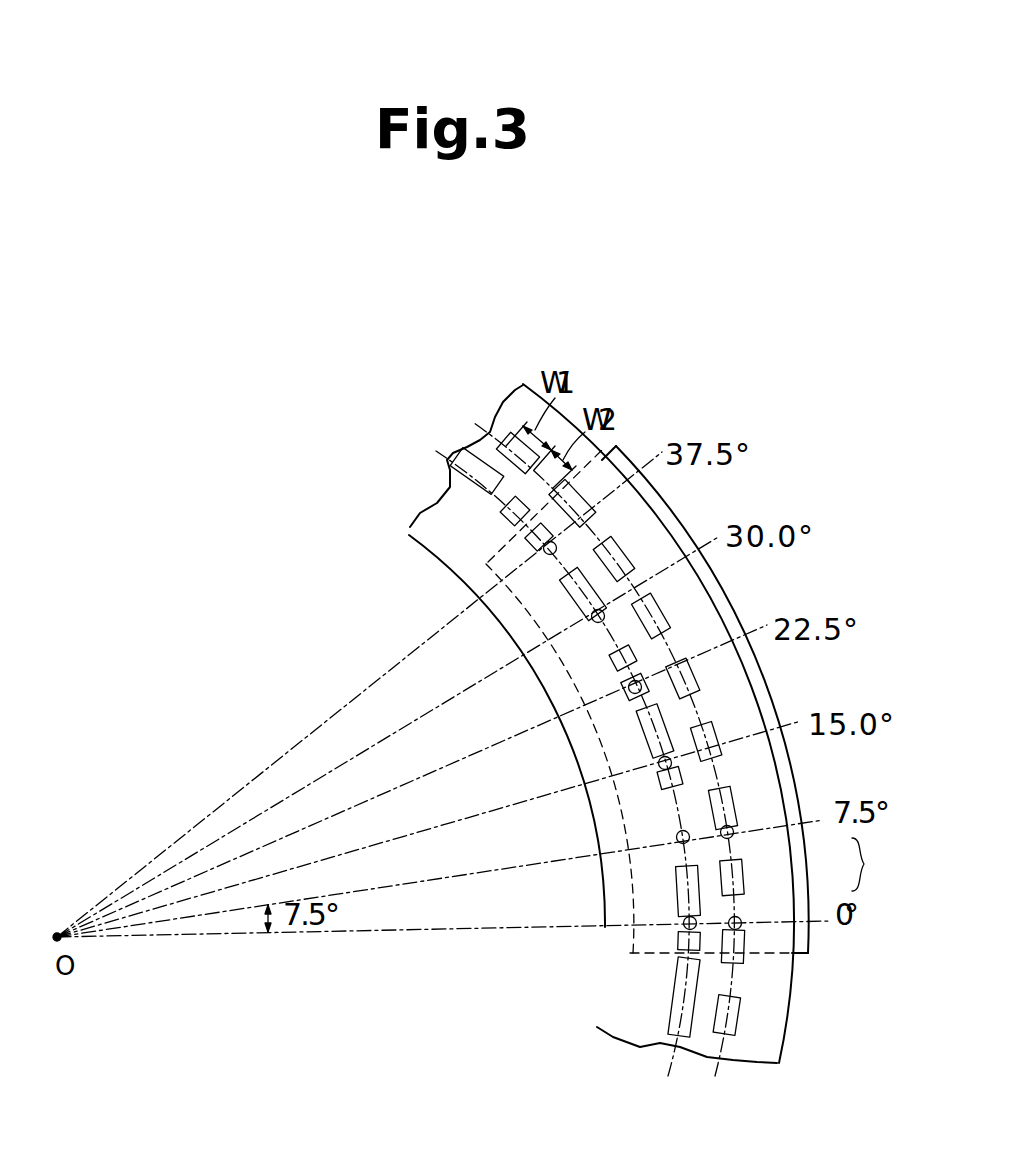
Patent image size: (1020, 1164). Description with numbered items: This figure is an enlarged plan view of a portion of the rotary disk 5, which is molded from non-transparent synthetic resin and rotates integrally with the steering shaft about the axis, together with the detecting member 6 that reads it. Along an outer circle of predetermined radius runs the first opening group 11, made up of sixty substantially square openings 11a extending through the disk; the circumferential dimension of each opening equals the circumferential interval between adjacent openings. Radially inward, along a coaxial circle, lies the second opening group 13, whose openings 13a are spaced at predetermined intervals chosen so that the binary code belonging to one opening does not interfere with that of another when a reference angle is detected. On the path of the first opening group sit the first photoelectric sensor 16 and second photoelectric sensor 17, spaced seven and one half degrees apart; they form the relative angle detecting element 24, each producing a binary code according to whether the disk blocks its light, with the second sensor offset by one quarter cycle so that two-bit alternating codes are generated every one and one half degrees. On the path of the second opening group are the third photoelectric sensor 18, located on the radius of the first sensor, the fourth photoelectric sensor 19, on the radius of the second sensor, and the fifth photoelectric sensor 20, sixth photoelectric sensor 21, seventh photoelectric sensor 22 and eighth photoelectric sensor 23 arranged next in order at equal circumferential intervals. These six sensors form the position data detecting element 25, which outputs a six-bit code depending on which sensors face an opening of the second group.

The rotary disk 5 is at (772, 1030).
The detecting member 6 is at (806, 948).
The first opening group 11 is at (690, 666).
The opening 11a is at (625, 552).
The second opening group 13 is at (460, 473).
The opening 13a is at (505, 514).
The first photoelectric sensor 16 is at (741, 921).
The second photoelectric sensor 17 is at (734, 833).
The third photoelectric sensor 18 is at (684, 919).
The fourth photoelectric sensor 19 is at (679, 843).
The fifth photoelectric sensor 20 is at (661, 769).
The sixth photoelectric sensor 21 is at (631, 694).
The seventh photoelectric sensor 22 is at (597, 623).
The eighth photoelectric sensor 23 is at (549, 555).
The relative angle detecting element 24 is at (875, 864).
The position data detecting element 25 is at (622, 886).